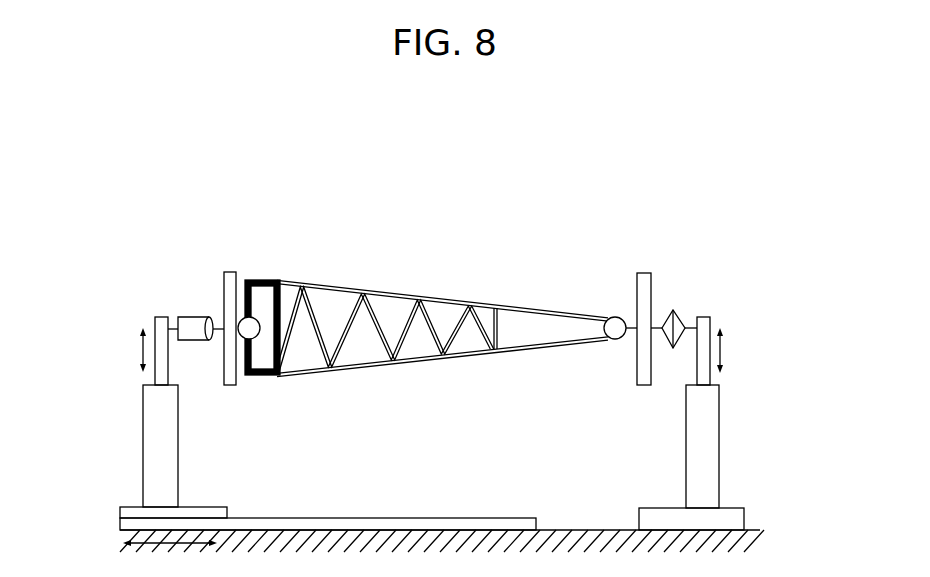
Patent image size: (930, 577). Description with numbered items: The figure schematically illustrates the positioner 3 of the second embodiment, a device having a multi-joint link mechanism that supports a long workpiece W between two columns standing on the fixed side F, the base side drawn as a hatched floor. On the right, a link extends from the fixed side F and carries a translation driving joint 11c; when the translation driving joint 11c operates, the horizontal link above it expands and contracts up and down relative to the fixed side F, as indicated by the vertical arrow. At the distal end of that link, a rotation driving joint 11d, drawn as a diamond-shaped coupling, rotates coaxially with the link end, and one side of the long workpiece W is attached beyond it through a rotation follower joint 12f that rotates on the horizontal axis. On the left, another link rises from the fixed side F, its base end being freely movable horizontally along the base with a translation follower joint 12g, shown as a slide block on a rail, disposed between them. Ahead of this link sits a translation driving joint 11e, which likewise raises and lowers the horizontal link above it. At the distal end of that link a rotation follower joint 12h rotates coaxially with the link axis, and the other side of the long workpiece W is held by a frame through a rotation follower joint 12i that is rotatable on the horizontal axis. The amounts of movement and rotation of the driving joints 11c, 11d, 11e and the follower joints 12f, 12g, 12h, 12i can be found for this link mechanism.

The positioner 3 is at (670, 223).
The translation driving joint 11c is at (711, 386).
The rotation driving joint 11d is at (675, 310).
The translation driving joint 11e is at (143, 385).
The rotation follower joint 12f is at (615, 328).
The translation follower joint 12g is at (180, 512).
The rotation follower joint 12h is at (199, 317).
The rotation follower joint 12i is at (278, 298).
The long workpiece W is at (401, 296).
The fixed side F is at (582, 530).